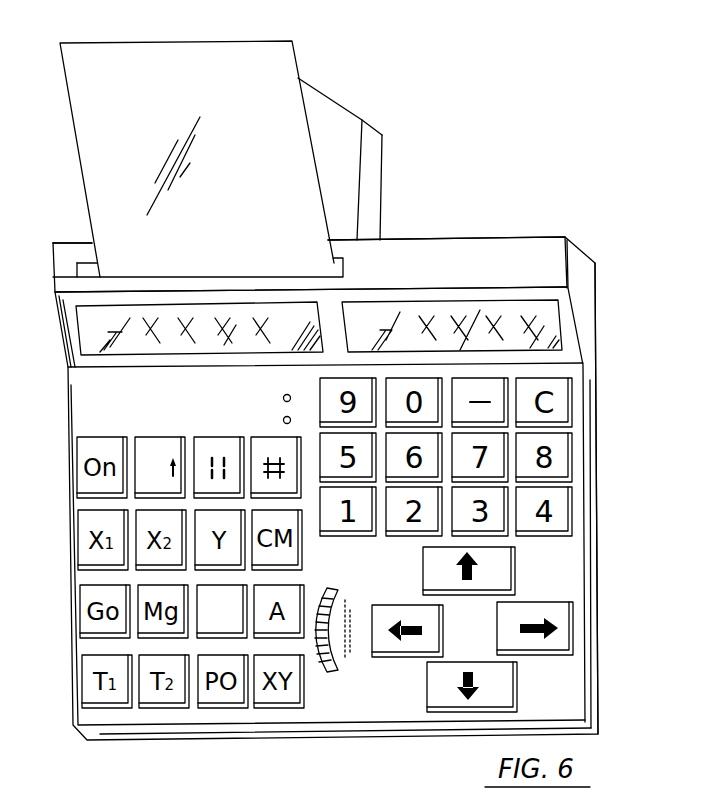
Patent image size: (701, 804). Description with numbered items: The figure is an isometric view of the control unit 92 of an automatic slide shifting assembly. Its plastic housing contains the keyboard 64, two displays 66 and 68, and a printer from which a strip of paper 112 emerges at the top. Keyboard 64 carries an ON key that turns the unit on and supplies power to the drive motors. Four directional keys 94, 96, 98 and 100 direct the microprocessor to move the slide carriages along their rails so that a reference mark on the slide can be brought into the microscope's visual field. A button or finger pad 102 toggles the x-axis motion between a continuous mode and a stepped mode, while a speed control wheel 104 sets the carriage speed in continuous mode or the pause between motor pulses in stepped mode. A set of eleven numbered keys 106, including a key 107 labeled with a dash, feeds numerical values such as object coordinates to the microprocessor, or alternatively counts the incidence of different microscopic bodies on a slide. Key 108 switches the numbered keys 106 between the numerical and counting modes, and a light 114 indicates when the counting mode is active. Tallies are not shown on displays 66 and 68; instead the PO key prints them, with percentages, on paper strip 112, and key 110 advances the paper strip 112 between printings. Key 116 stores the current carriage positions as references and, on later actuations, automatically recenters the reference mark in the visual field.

The keyboard 64 is at (614, 478).
The display 66 is at (88, 320).
The display 68 is at (548, 312).
The control unit 92 is at (468, 252).
The directional key 94 is at (393, 612).
The directional key 96 is at (563, 615).
The directional key 98 is at (507, 568).
The directional key 100 is at (503, 683).
The button or finger pad 102 is at (208, 445).
The speed control wheel 104 is at (338, 647).
The numbered keys 106 is at (575, 437).
The dash key 107 is at (495, 388).
The mode key 108 is at (270, 445).
The paper advance key 110 is at (155, 445).
The paper strip 112 is at (283, 73).
The light 114 is at (283, 396).
The reference key 116 is at (228, 592).